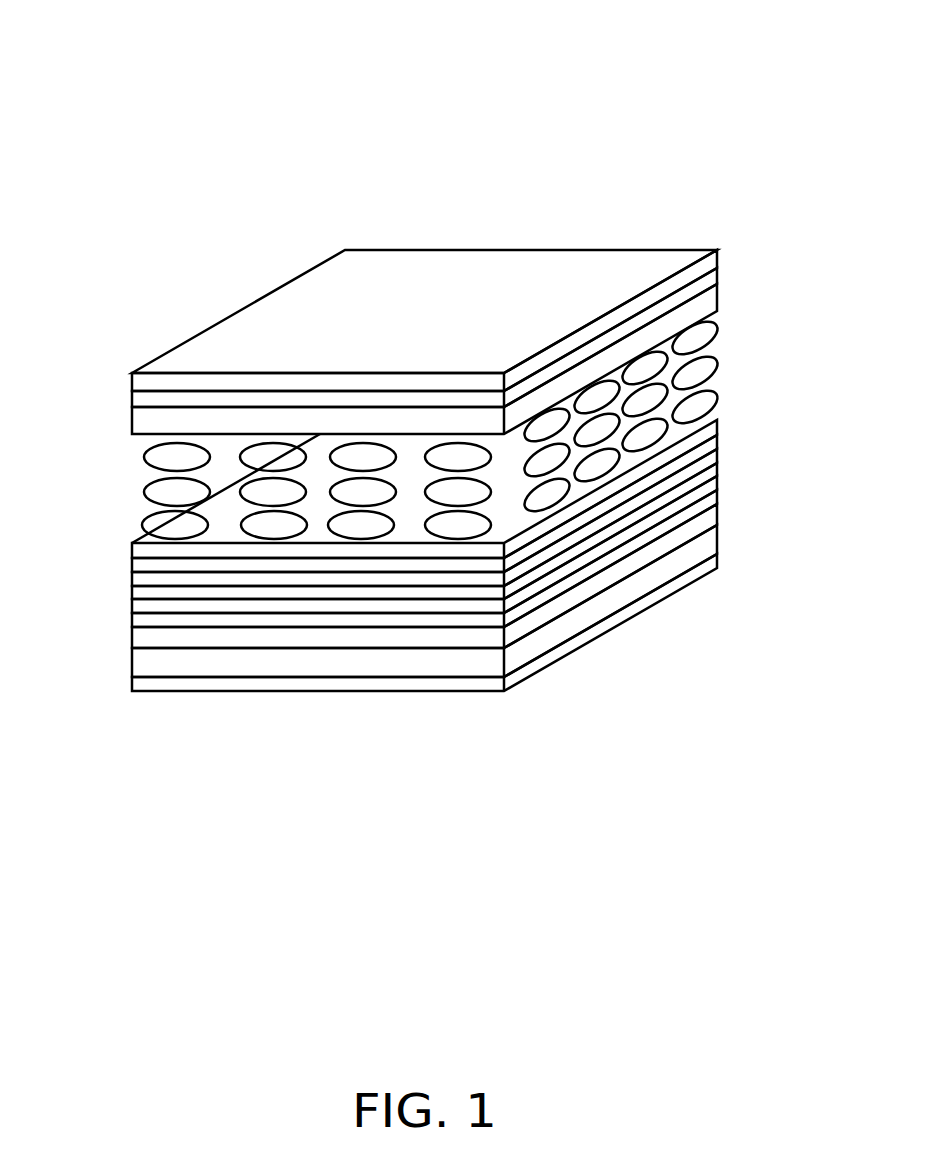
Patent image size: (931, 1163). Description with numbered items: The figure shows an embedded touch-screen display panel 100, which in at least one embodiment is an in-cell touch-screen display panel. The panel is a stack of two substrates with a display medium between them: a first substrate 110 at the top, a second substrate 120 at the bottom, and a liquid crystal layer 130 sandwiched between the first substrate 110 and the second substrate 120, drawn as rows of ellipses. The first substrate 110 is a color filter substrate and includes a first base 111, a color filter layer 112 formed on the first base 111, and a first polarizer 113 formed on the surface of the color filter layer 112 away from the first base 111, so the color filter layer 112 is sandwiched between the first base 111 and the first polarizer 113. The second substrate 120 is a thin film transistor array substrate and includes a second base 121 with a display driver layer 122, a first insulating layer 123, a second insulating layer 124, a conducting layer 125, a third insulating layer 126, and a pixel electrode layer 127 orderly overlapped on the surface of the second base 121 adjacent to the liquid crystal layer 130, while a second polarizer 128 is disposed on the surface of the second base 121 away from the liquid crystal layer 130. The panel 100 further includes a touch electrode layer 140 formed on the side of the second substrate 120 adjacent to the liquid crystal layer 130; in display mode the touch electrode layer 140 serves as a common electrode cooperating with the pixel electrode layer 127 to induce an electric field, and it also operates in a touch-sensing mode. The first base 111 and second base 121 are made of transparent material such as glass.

The embedded touch-screen display panel 100 is at (356, 54).
The first substrate 110 is at (113, 403).
The first base 111 is at (710, 297).
The color filter layer 112 is at (712, 278).
The first polarizer 113 is at (715, 255).
The second substrate 120 is at (113, 596).
The second base 121 is at (582, 618).
The display driver layer 122 is at (532, 620).
The first insulating layer 123 is at (675, 520).
The second insulating layer 124 is at (710, 472).
The conducting layer 125 is at (716, 455).
The third insulating layer 126 is at (716, 440).
The pixel electrode layer 127 is at (718, 420).
The second polarizer 128 is at (640, 605).
The liquid crystal layer 130 is at (113, 481).
The touch electrode layer 140 is at (705, 490).